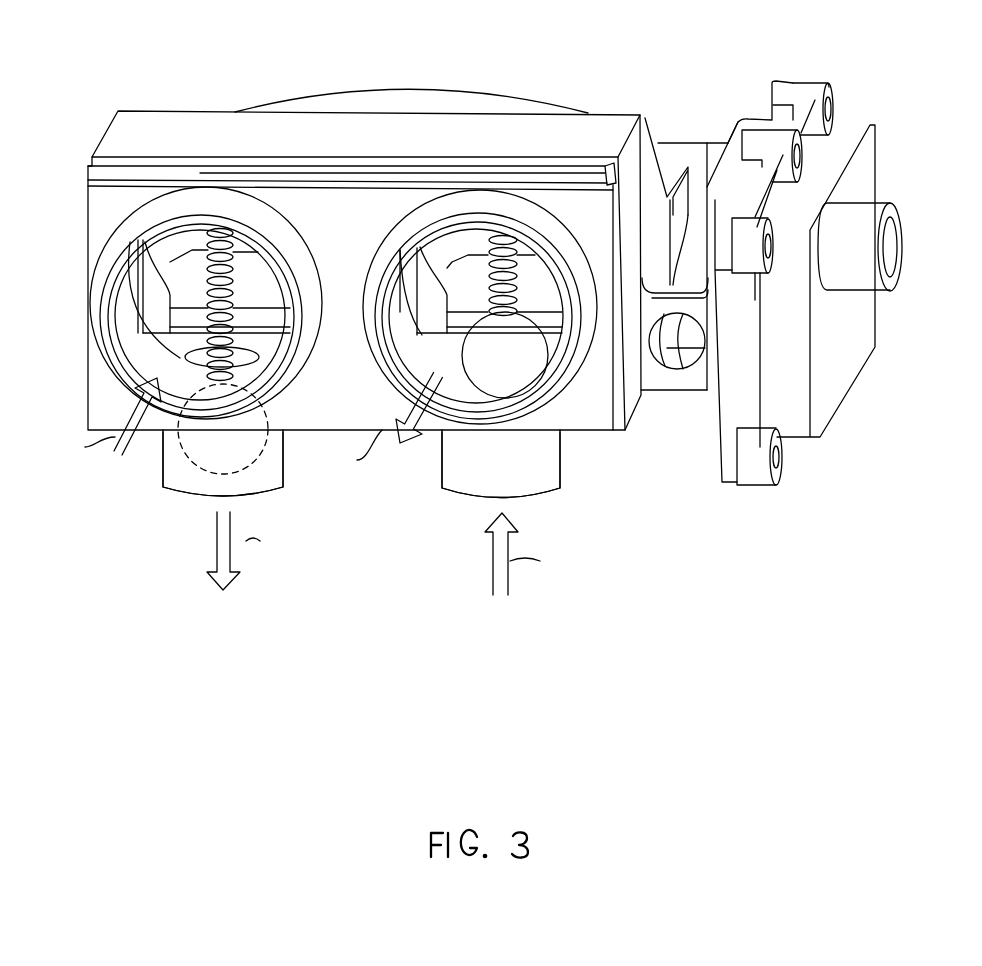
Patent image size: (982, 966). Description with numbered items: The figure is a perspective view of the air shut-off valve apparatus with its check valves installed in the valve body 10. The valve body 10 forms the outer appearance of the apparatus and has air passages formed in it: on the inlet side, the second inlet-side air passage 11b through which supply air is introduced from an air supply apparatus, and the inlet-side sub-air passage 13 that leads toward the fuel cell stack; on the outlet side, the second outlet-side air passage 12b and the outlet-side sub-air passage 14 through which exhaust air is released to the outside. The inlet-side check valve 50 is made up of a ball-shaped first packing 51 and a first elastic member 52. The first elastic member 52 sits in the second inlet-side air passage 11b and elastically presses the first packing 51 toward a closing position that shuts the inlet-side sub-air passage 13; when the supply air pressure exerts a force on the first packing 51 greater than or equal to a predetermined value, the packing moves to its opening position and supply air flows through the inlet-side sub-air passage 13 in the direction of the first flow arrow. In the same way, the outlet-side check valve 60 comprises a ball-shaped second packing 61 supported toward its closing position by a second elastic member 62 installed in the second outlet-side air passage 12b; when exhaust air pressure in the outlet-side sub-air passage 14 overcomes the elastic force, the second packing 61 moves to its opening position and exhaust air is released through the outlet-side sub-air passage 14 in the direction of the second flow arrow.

The valve body 10 is at (574, 86).
The second inlet-side air passage 11b is at (165, 242).
The second outlet-side air passage 12b is at (568, 328).
The inlet-side sub-air passage 13 is at (188, 489).
The outlet-side sub-air passage 14 is at (543, 485).
The inlet-side check valve 50 is at (325, 467).
The first packing 51 is at (276, 460).
The first elastic member 52 is at (207, 288).
The outlet-side check valve 60 is at (568, 371).
The second packing 61 is at (485, 358).
The second elastic member 62 is at (490, 272).